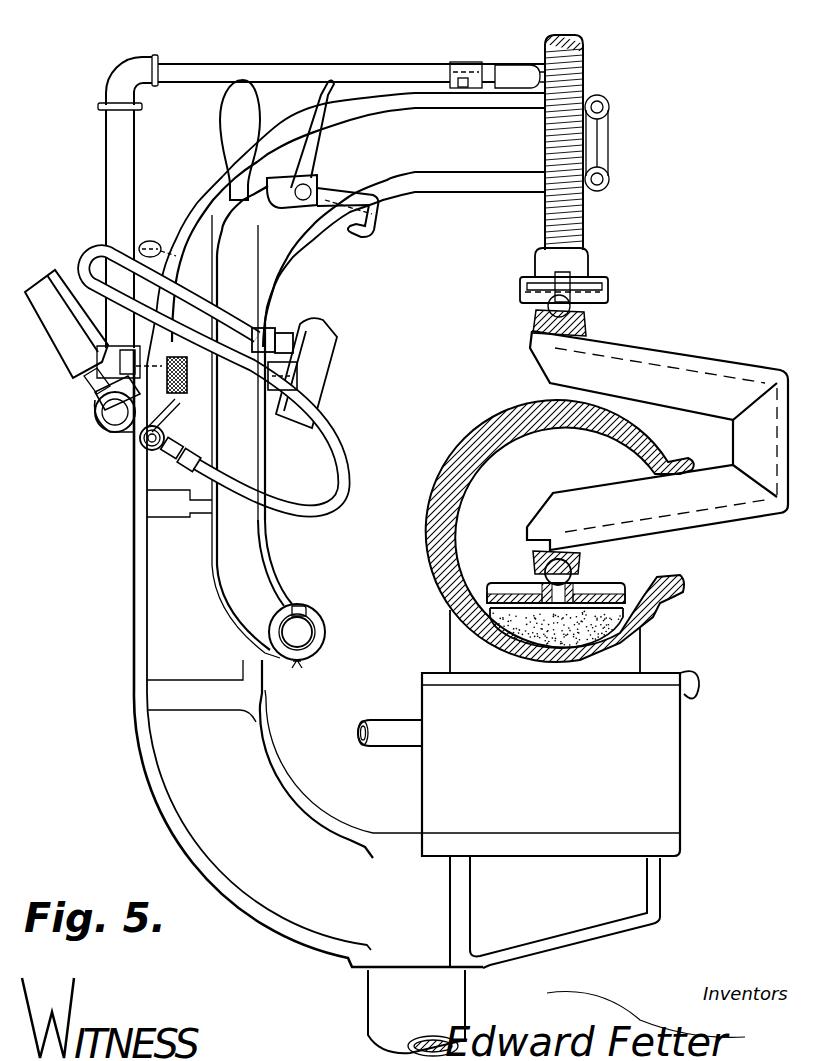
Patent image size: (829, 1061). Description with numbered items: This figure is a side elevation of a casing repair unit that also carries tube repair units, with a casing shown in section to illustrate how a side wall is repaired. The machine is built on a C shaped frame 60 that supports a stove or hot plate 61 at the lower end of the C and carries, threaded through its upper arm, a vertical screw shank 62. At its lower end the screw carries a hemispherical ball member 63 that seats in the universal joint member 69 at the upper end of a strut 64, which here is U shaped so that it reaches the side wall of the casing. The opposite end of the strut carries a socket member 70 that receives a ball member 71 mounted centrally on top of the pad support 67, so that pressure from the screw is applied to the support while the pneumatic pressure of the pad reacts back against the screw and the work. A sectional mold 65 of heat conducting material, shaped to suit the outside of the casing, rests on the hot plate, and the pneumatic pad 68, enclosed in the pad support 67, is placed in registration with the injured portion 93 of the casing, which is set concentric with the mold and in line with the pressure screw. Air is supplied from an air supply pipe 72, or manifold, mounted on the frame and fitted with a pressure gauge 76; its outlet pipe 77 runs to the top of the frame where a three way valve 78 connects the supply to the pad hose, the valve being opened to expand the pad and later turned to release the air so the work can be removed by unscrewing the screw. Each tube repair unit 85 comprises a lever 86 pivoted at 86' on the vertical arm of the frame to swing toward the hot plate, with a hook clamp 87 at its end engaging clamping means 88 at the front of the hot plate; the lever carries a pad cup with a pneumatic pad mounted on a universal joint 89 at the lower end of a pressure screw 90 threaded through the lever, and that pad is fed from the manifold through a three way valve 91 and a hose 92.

The C shaped frame 60 is at (140, 570).
The hot plate 61 is at (657, 723).
The vertical screw shank 62 is at (578, 228).
The hemispherical ball member 63 is at (575, 307).
The strut 64 is at (723, 377).
The sectional mold 65 is at (632, 643).
The pad support 67 is at (448, 580).
The pneumatic pad 68 is at (458, 623).
The universal joint member 69 is at (535, 317).
The socket member 70 is at (533, 548).
The ball member 71 is at (560, 573).
The air supply pipe 72 is at (105, 425).
The pressure gauge 76 is at (38, 288).
The outlet pipe 77 is at (312, 75).
The three way valve 78 is at (533, 65).
The tube repair unit 85 is at (300, 337).
The lever 86 is at (221, 611).
The pivot 86' is at (311, 610).
The hook clamp 87 is at (330, 190).
The pneumatic pad 88 is at (687, 703).
The universal joint 89 is at (270, 366).
The pressure screw 90 is at (178, 395).
The three way valve 91 is at (140, 448).
The hose 92 is at (482, 447).
The injured portion 93 is at (547, 660).